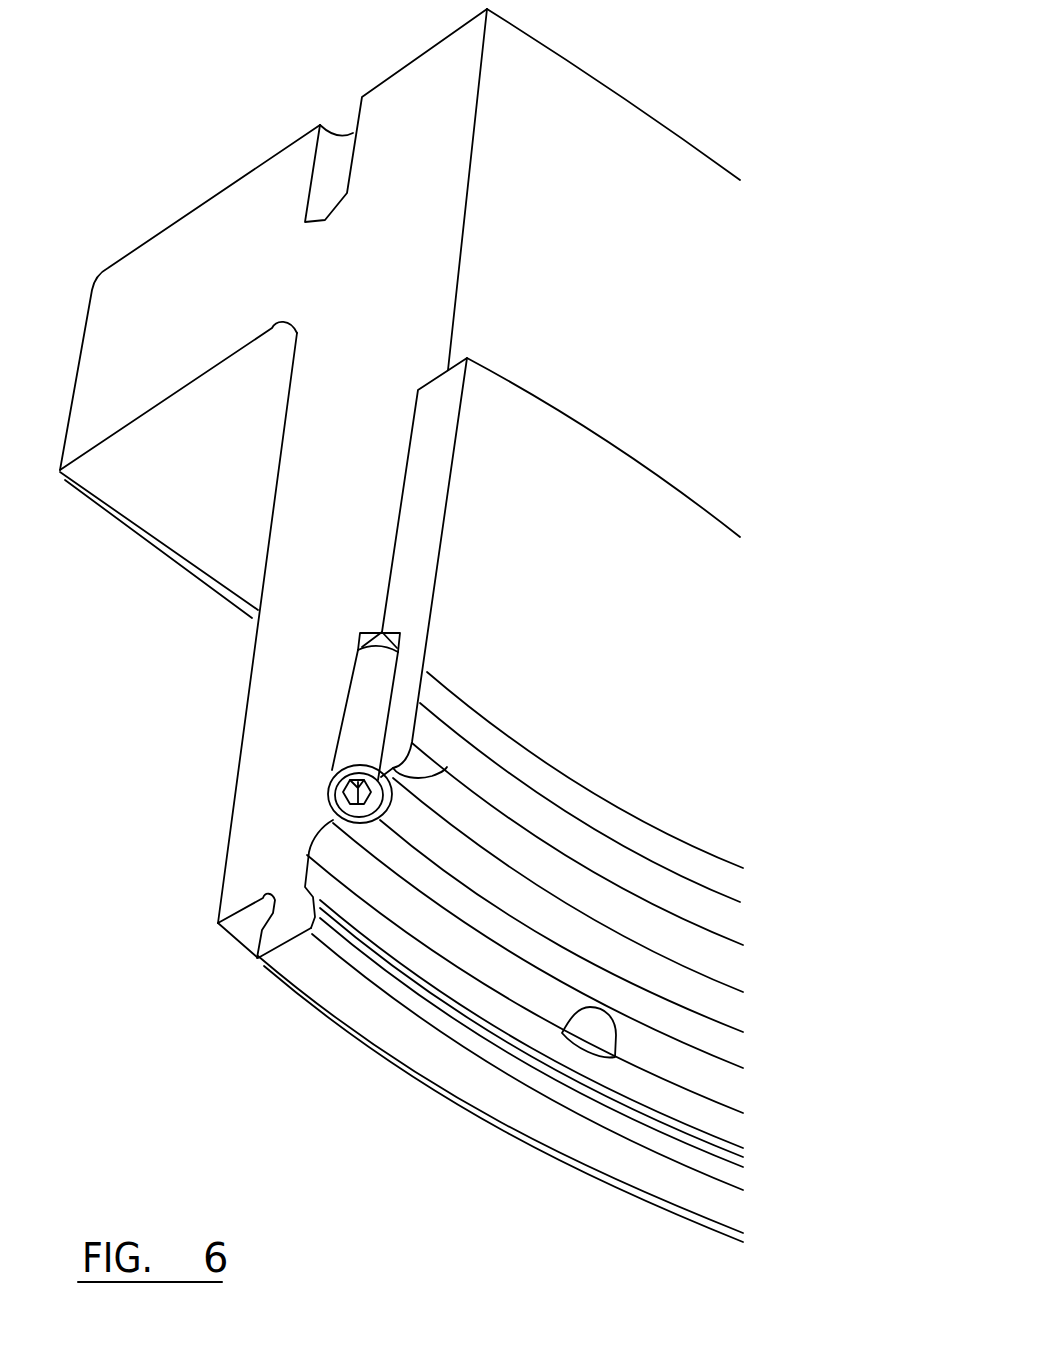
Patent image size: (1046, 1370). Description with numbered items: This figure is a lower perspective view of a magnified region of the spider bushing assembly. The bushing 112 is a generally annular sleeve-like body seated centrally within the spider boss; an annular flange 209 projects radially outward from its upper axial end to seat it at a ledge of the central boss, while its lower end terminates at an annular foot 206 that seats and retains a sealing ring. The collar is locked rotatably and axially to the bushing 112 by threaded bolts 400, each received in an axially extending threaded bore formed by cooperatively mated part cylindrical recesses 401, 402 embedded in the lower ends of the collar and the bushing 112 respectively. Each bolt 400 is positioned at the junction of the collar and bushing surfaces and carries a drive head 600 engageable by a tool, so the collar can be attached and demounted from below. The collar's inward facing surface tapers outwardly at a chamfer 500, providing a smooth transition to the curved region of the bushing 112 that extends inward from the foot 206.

The bushing 112 is at (388, 320).
The annular flange 209 is at (140, 323).
The annular foot 206 is at (293, 922).
The bolt 400 is at (357, 722).
The part cylindrical recess 401 is at (400, 631).
The part cylindrical recess 402 is at (360, 633).
The chamfer 500 is at (447, 768).
The drive head 600 is at (333, 801).